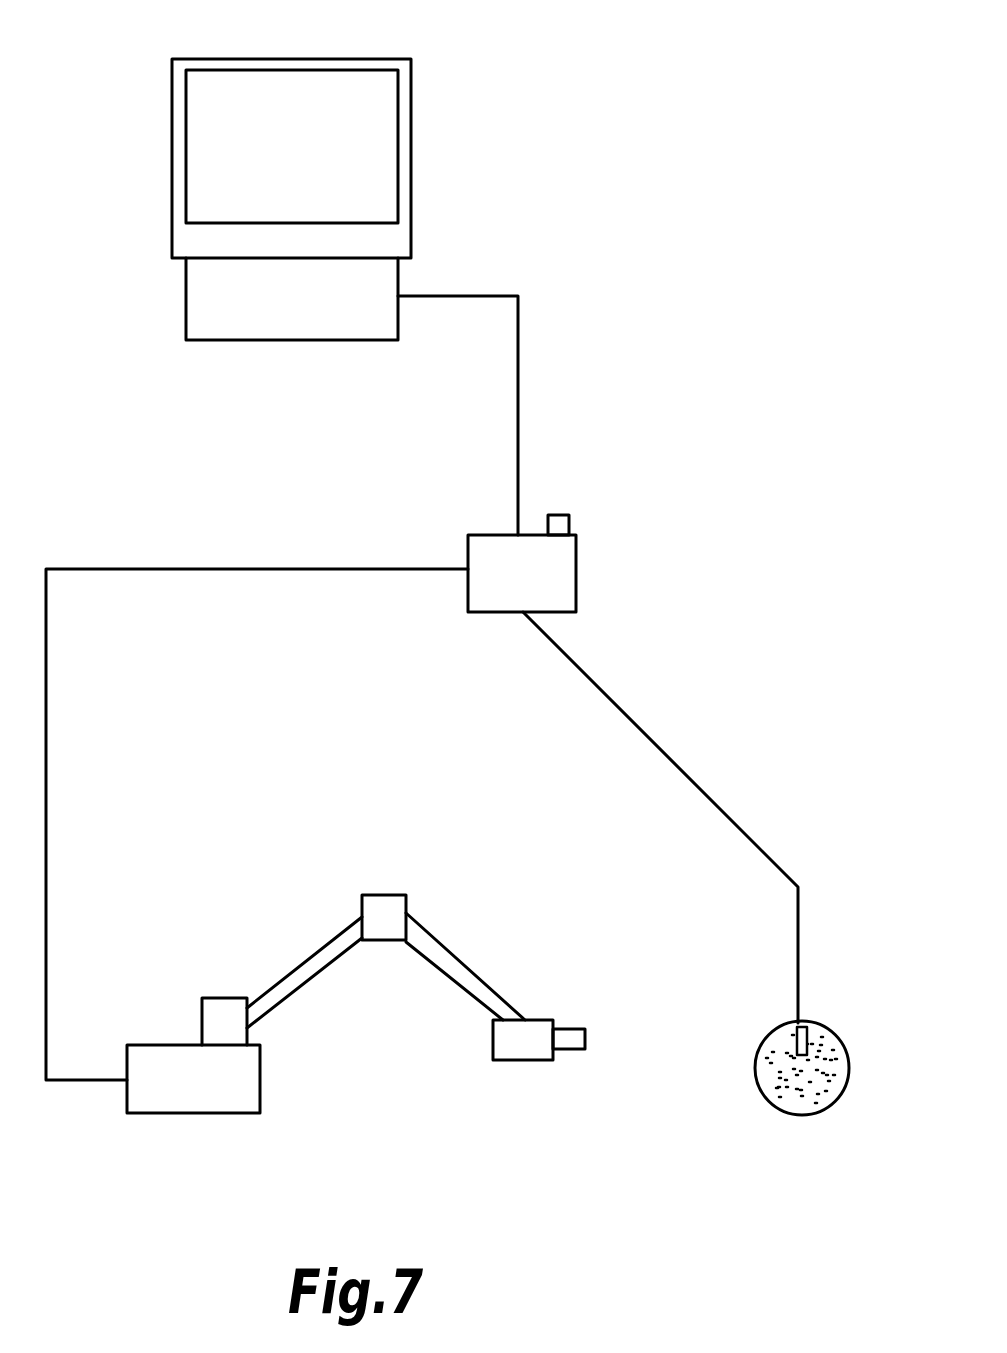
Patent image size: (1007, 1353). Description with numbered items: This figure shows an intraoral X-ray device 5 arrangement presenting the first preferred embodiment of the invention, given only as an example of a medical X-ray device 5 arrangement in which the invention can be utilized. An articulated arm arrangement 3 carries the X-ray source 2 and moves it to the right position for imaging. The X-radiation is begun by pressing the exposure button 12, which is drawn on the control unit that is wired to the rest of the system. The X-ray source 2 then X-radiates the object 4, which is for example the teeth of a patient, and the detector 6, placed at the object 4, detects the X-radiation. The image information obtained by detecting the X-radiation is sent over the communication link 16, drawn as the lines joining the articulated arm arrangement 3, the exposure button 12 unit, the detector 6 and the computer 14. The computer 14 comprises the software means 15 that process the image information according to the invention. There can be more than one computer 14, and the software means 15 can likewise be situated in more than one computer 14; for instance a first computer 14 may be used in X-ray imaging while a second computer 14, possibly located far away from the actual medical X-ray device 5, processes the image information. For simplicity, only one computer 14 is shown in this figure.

The X-ray source 2 is at (533, 1060).
The articulated arm arrangement 3 is at (270, 882).
The object 4 is at (797, 1117).
The intraoral X-ray device 5 is at (828, 537).
The detector 6 is at (807, 1032).
The exposure button 12 is at (569, 522).
The computer 14 is at (207, 59).
The software means 15 is at (240, 209).
The communication link 16 is at (518, 337).